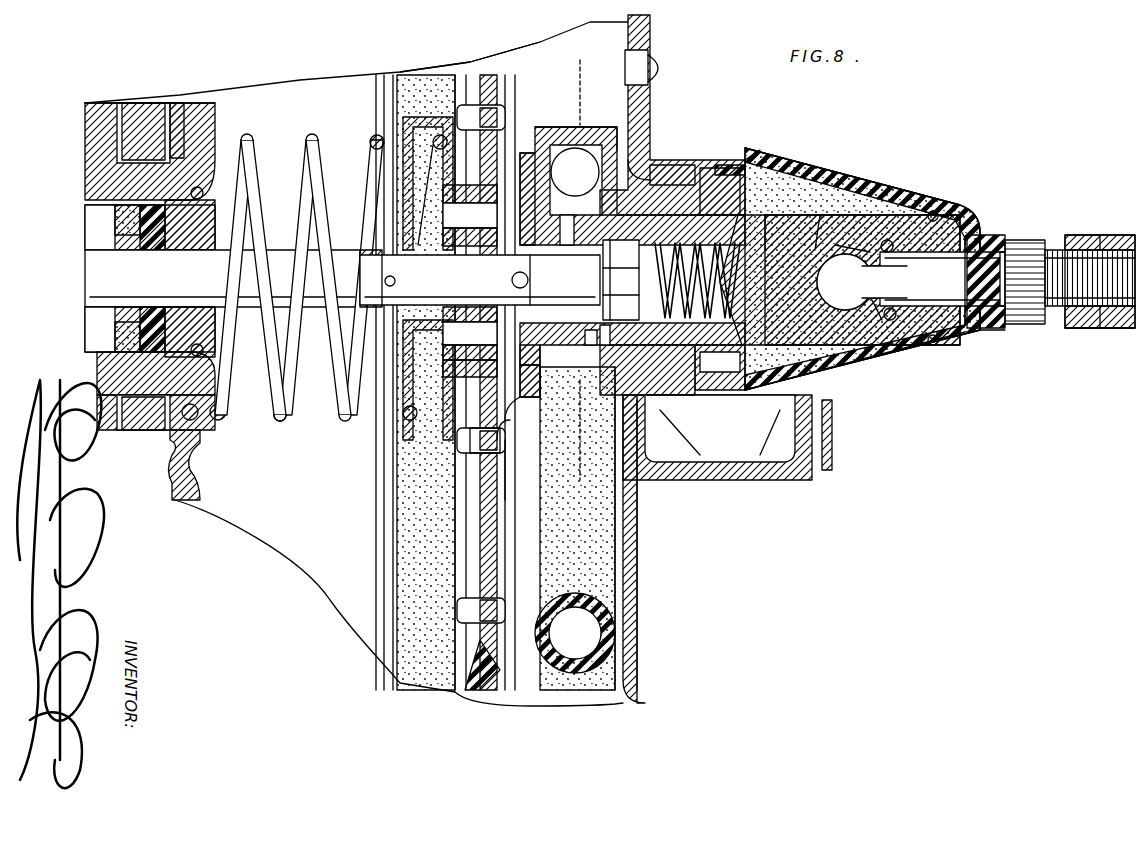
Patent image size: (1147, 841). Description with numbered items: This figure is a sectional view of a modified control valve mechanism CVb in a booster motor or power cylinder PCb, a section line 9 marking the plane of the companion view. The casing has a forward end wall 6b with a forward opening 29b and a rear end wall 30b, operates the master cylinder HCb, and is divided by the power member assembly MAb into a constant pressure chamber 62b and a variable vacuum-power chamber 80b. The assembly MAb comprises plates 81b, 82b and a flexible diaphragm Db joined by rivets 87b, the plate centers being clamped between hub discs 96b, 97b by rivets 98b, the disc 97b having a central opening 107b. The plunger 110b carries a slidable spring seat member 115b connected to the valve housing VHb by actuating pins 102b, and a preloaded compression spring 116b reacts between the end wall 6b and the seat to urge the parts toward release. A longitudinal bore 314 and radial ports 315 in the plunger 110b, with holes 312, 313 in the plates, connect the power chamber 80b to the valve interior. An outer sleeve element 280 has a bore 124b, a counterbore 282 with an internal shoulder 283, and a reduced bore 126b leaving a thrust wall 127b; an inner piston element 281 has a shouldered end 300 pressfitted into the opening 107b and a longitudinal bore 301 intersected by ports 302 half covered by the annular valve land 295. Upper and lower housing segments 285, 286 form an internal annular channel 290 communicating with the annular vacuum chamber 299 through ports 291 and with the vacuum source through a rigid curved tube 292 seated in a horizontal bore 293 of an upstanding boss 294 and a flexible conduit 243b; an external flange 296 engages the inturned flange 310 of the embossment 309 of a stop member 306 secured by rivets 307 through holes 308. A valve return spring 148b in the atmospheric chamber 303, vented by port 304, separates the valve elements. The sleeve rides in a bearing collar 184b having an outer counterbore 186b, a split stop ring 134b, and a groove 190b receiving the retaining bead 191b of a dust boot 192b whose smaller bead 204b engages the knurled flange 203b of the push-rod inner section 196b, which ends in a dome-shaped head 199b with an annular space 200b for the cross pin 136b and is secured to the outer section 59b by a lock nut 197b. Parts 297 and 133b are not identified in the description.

The forward end wall 6b is at (190, 108).
The forward opening 29b is at (185, 150).
The master cylinder HCb is at (66, 219).
The plunger 110b is at (262, 250).
The compression spring 116b is at (283, 432).
The longitudinal bore 314 is at (365, 252).
The disc opening 107b is at (382, 240).
The spring seat member 115b is at (393, 440).
The actuating pins 102b is at (425, 240).
The rivets 307 is at (470, 110).
The aligned holes 308 is at (478, 452).
The rivets 87b is at (480, 612).
The flexible diaphragm Db is at (470, 685).
The power member assembly MAb is at (393, 535).
The diaphragm plate 81b is at (480, 510).
The diaphragm plate 82b is at (497, 540).
The radial ports 315 is at (443, 312).
The rivets 98b is at (443, 328).
The hub disc 96b is at (443, 350).
The hub disc 97b is at (443, 368).
The shouldered end portion 300 is at (500, 282).
The hole 312 is at (445, 262).
The hole 313 is at (410, 282).
The ports 302 is at (513, 281).
The longitudinal bore 301 is at (552, 280).
The annular valve land 295 is at (520, 200).
The valve housing VHb is at (676, 436).
The horizontal bore 293 is at (598, 128).
The rigid curved tube 292 is at (576, 180).
The ports 291 is at (592, 430).
The surface boss 294 is at (590, 125).
The section line 9 is at (550, 58).
The constant pressure chamber 62b is at (636, 538).
The rear end wall 30b is at (640, 570).
The annular vacuum chamber 299 is at (652, 140).
The internal annular channel 290 is at (660, 165).
The upper valve housing segment 285 is at (700, 170).
The external annular groove 190b is at (718, 165).
The retaining bead 191b is at (752, 160).
The control valve mechanism CVb is at (725, 157).
The valve return spring 148b is at (835, 305).
The atmospheric chamber 303 is at (815, 330).
The dome-shaped head 199b is at (848, 320).
The annular space 200b is at (880, 335).
The port 304 is at (672, 370).
The longitudinal bore 124b is at (725, 388).
The inner valve element 281 is at (671, 280).
The circular stop member 306 is at (505, 440).
The passage 297 is at (530, 360).
The counterbore 282 is at (528, 375).
The inturned annular flange 310 is at (522, 400).
The annular flange 296 is at (515, 420).
The wall embossment 309 is at (510, 430).
The internal annular shoulder 283 is at (592, 345).
The lower valve housing segment 286 is at (600, 370).
The flexible conduit 243b is at (575, 633).
The power cylinder PCb is at (519, 55).
The bearing collar 184b is at (797, 148).
The outer counterbore 186b is at (795, 215).
The outer valve element 280 is at (822, 215).
The thrust wall 127b is at (840, 245).
The cross pin 136b is at (887, 245).
The split stop ring 134b is at (935, 212).
The dust boot 192b is at (855, 380).
The pin 133b is at (920, 350).
The reduced diameter bore 126b is at (985, 240).
The annular bead 204b is at (995, 328).
The knurled annular flange 203b is at (1020, 240).
The inner push-rod section 196b is at (1050, 318).
The outer push-rod section 59b is at (1108, 235).
The lock nut 197b is at (1078, 328).
The variable vacuum-power chamber 80b is at (245, 530).